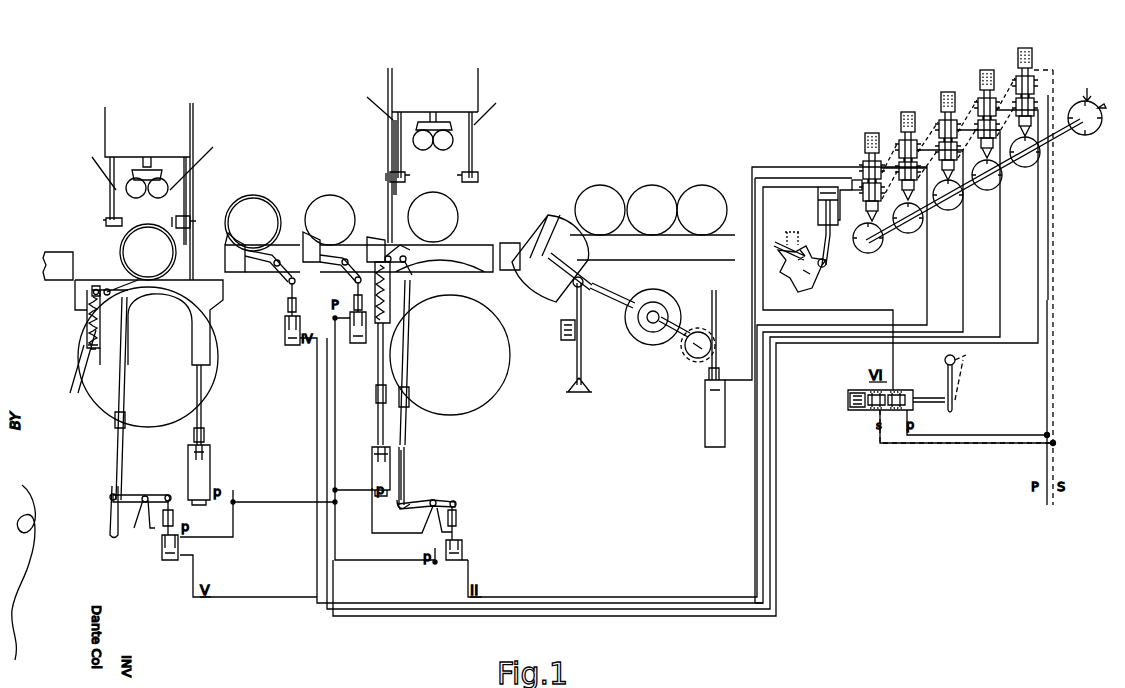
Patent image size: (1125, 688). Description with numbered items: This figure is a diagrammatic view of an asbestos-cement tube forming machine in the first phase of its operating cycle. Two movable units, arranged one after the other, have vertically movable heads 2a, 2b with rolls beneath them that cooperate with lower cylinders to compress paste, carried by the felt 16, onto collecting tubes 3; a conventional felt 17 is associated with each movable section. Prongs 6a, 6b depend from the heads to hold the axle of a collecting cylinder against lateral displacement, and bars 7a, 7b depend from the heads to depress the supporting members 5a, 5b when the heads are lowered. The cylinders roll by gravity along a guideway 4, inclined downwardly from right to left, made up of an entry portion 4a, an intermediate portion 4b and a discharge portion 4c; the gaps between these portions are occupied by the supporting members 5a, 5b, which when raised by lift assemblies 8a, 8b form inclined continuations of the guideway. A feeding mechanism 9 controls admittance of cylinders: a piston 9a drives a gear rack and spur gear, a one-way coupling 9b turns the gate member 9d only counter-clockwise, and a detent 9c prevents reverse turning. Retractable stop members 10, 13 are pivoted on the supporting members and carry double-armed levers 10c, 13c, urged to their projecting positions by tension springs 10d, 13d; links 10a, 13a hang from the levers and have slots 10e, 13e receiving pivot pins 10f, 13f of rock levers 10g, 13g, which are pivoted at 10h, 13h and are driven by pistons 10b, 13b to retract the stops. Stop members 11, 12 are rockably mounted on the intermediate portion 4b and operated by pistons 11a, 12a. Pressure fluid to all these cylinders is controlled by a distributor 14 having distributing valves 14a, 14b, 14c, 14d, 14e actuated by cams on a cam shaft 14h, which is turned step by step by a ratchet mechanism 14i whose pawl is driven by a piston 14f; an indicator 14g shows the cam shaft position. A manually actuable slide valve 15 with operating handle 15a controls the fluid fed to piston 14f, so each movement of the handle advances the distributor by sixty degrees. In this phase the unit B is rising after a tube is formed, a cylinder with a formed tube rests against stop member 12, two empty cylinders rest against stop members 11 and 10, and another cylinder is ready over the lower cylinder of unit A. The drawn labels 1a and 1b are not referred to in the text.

The drum A1 1a is at (492, 386).
The drum B1 1b is at (104, 403).
The vertically movable head 2a is at (478, 88).
The vertically movable head 2b is at (105, 130).
The collecting tubes 3 is at (700, 187).
The guideway 4 is at (719, 252).
The entry portion 4a is at (636, 258).
The intermediate portion 4b is at (290, 245).
The discharge portion 4c is at (55, 270).
The supporting member 5a is at (482, 276).
The supporting member 5b is at (205, 324).
The prongs 6a is at (392, 172).
The prongs 6b is at (216, 192).
The bar 7a is at (392, 158).
The bar 7b is at (185, 190).
The lift assembly 8a is at (377, 405).
The lift assembly 8b is at (205, 414).
The feeding mechanism 9 is at (668, 355).
The piston 9a is at (705, 390).
The one-way coupling 9b is at (668, 293).
The detent 9c is at (583, 352).
The gate member 9d is at (557, 232).
The retractable stop member 10 is at (405, 243).
The link 10a is at (407, 438).
The piston 10b is at (465, 558).
The double-armed lever 10c is at (378, 262).
The tension spring 10d is at (390, 285).
The slot 10e is at (405, 478).
The pivot pin 10f is at (399, 509).
The rock lever 10g is at (457, 500).
The pivot 10h is at (440, 502).
The stop member 11 is at (312, 268).
The piston 11a is at (356, 346).
The stop member 12 is at (236, 262).
The piston 12a is at (284, 338).
The retractable stop member 13 is at (110, 286).
The link 13a is at (122, 460).
The piston 13b is at (160, 560).
The double-armed lever 13c is at (96, 286).
The tension spring 13d is at (87, 315).
The slot 13e is at (110, 520).
The pivot pin 13f is at (110, 496).
The rock lever 13g is at (153, 496).
The pivot 13h is at (136, 506).
The pressure fluid distributor 14 is at (866, 262).
The distributing valve 14a is at (872, 133).
The distributing valve 14b is at (908, 112).
The distributing valve 14c is at (948, 92).
The distributing valve 14d is at (987, 70).
The distributing valve 14e is at (1025, 48).
The piston 14f is at (818, 211).
The indicator 14g is at (1086, 136).
The cam shaft 14h is at (926, 213).
The ratchet mechanism 14i is at (813, 284).
The slide valve 15 is at (856, 412).
The operating handle 15a is at (947, 366).
The felt 16 is at (77, 370).
The felt 17 is at (92, 157).